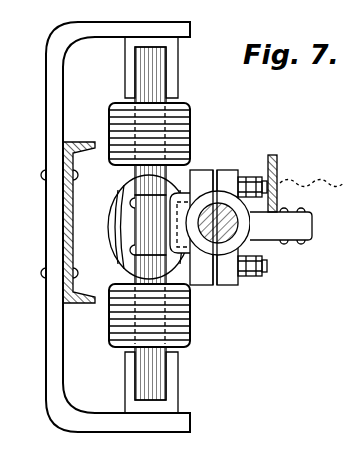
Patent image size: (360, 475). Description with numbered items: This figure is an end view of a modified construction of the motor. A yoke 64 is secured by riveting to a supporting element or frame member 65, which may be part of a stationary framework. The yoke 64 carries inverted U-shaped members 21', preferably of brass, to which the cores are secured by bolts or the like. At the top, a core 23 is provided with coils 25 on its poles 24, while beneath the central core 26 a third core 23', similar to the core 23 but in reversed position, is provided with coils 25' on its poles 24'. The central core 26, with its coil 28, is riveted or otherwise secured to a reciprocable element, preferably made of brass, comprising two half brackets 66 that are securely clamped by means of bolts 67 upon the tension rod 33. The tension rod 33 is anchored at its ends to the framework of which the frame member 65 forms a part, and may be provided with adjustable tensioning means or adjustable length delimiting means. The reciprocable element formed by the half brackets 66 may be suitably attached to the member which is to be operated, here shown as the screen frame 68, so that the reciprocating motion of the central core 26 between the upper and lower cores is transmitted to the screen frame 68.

The yoke 64 is at (56, 112).
The frame member 65 is at (70, 248).
The inverted U-shaped member 21' is at (151, 225).
The core 23 is at (169, 76).
The coil 25 is at (164, 132).
The pole 24 is at (127, 180).
The coil 28 is at (116, 210).
The core 26 is at (148, 228).
The pole 24' is at (119, 296).
The coil 25' is at (169, 315).
The third core 23' is at (124, 373).
The tension rod 33 is at (226, 238).
The half bracket 66 is at (228, 174).
The bolt 67 is at (252, 181).
The screen frame 68 is at (294, 184).